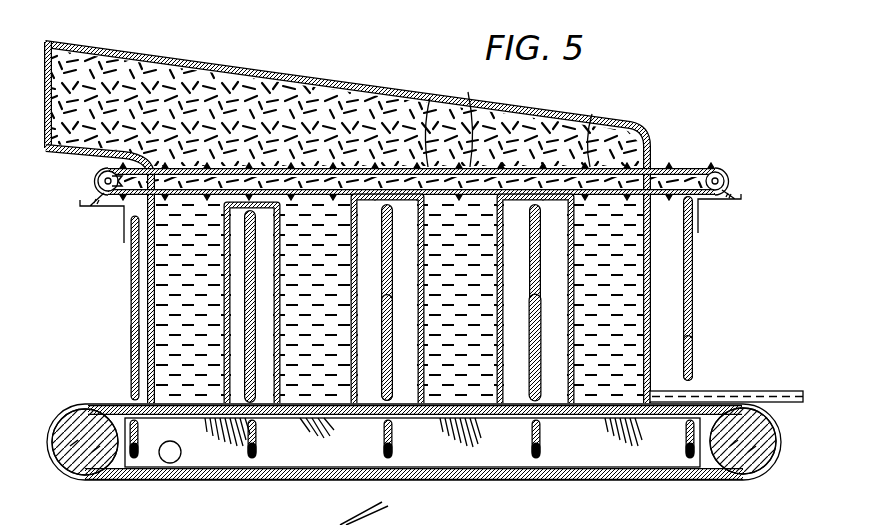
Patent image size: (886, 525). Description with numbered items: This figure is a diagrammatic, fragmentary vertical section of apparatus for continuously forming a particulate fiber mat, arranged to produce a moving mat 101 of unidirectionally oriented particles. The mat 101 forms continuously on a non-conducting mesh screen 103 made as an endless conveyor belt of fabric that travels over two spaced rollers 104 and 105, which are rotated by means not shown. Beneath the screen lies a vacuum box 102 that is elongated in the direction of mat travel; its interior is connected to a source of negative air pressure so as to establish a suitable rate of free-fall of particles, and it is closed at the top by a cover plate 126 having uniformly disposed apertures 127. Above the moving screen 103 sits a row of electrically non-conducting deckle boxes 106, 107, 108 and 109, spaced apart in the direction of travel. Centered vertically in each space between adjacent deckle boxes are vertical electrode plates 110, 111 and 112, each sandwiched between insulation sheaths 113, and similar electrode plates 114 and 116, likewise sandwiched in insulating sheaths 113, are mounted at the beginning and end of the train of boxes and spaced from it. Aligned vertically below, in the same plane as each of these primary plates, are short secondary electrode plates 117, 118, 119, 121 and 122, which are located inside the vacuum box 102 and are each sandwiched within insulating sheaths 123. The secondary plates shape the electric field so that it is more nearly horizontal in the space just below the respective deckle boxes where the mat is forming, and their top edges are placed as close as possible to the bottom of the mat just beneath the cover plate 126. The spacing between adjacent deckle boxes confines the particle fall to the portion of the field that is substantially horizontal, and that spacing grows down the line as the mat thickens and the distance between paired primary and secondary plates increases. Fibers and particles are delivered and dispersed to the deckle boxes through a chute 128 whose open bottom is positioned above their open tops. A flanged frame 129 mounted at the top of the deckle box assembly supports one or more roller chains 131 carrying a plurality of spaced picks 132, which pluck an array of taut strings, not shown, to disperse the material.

The moving mat 101 is at (800, 392).
The vacuum box 102 is at (600, 480).
The non-conducting mesh screen 103 is at (104, 404).
The roller 104 is at (76, 478).
The roller 105 is at (765, 452).
The deckle box 106 is at (148, 296).
The deckle box 107 is at (357, 300).
The deckle box 108 is at (504, 284).
The deckle box 109 is at (696, 356).
The vertical electrode plate 110 is at (229, 434).
The vertical electrode plate 111 is at (383, 381).
The vertical electrode plate 112 is at (529, 350).
The insulation sheaths 113 is at (130, 342).
The electrode plate 114 is at (130, 268).
The electrode plate 116 is at (696, 275).
The secondary electrode plate 117 is at (258, 446).
The secondary electrode plate 118 is at (396, 436).
The secondary electrode plate 119 is at (544, 436).
The secondary electrode plate 121 is at (140, 436).
The secondary electrode plate 122 is at (684, 438).
The insulating sheaths 123 is at (136, 456).
The cover plate 126 is at (326, 416).
The apertures 127 is at (472, 416).
The chute 128 is at (326, 80).
The flanged frame 129 is at (724, 202).
The roller chain 131 is at (592, 116).
The picks 132 is at (466, 96).